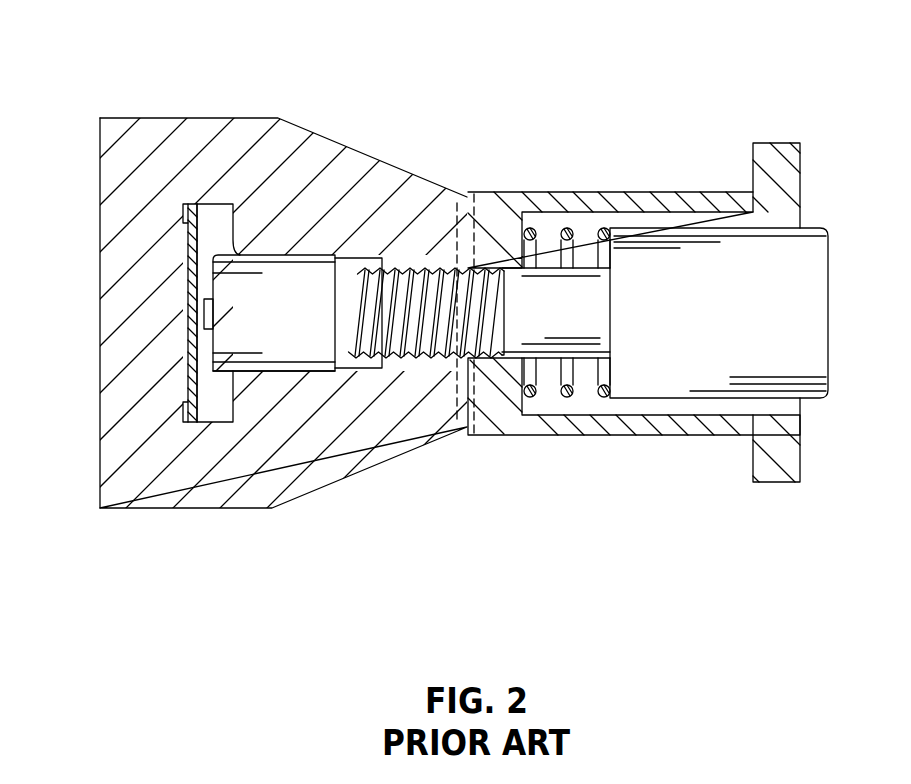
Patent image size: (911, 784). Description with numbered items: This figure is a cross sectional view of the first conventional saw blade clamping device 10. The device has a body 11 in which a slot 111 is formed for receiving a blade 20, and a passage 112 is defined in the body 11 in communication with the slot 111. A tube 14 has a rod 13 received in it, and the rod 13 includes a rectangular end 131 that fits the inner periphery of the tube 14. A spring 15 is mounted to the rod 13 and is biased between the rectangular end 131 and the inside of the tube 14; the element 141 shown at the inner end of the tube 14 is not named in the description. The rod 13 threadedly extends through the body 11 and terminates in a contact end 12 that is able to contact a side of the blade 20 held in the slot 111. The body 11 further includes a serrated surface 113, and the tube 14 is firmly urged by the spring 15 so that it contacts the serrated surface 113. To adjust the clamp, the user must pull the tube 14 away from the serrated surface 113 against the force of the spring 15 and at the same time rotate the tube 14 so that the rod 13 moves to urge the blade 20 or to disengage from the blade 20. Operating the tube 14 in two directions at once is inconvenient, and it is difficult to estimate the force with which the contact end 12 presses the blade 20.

The saw blade clamping device 10 is at (333, 96).
The body 11 is at (153, 118).
The slot 111 is at (213, 235).
The passage 112 is at (274, 362).
The serrated surface 113 is at (474, 435).
The contact end 12 is at (267, 297).
The rod 13 is at (527, 310).
The rectangular end 131 is at (760, 281).
The tube 14 is at (783, 143).
The spring seat 141 is at (523, 368).
The spring 15 is at (577, 240).
The blade 20 is at (192, 336).